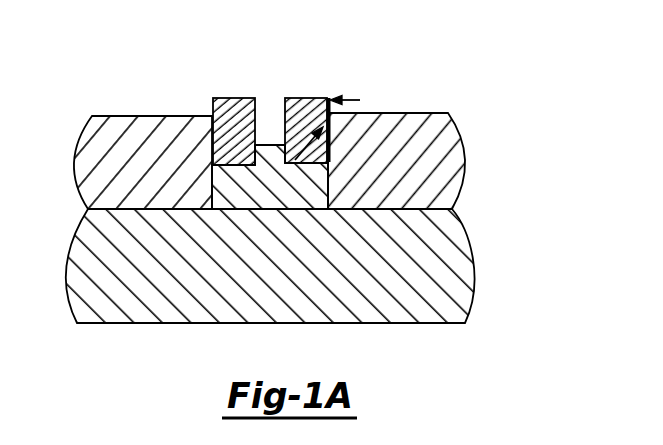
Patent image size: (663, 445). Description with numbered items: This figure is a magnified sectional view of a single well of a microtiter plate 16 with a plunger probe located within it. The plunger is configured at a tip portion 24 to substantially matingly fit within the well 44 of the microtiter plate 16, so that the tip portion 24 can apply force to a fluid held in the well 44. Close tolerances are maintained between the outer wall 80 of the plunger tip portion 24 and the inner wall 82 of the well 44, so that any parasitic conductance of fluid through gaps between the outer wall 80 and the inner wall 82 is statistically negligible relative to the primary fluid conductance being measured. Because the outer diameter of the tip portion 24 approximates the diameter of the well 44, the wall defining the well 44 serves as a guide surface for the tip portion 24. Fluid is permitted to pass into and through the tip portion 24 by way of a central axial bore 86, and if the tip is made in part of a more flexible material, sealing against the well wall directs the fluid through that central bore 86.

The microtiter plate 16 is at (438, 113).
The well 44 is at (333, 197).
The tip portion 24 is at (302, 108).
The central axial bore 86 is at (272, 108).
The inner wall 82 is at (331, 157).
The outer wall 80 is at (360, 100).